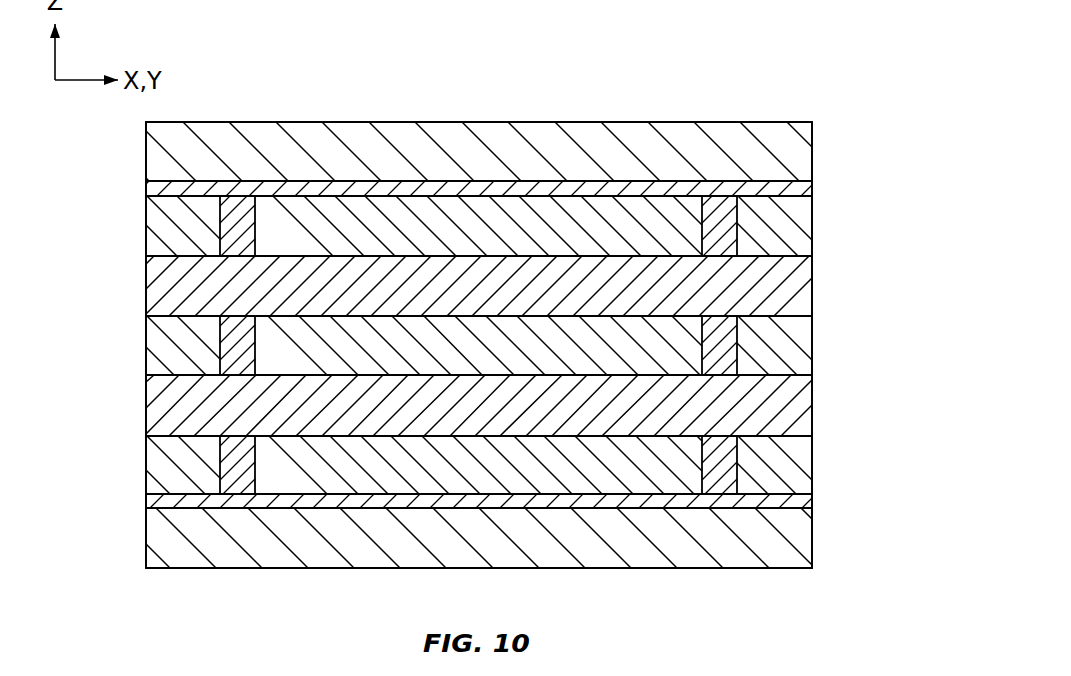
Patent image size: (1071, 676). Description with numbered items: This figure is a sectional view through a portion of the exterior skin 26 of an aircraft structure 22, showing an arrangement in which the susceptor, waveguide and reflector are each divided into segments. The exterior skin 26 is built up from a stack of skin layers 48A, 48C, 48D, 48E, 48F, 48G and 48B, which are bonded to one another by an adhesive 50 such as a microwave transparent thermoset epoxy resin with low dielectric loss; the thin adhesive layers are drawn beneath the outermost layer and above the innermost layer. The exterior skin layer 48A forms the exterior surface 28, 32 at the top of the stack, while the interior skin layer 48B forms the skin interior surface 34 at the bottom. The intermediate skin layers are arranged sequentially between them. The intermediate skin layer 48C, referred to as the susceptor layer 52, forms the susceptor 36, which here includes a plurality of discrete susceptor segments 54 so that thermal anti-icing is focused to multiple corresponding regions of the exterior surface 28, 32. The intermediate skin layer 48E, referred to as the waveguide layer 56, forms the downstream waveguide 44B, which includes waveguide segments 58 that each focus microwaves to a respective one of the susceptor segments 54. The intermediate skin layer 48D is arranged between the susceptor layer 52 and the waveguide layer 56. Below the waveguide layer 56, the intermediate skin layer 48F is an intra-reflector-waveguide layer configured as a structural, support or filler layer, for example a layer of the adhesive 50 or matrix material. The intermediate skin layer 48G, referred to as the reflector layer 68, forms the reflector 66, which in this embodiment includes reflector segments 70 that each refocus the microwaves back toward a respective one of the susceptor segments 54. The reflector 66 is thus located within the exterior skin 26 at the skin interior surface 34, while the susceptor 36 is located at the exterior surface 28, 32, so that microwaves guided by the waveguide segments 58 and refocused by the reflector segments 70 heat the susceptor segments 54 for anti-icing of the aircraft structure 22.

The aircraft structure 22 is at (522, 286).
The exterior skin 26 is at (808, 78).
The exterior surface 28 is at (479, 82).
The exterior surface 32 is at (358, 121).
The skin interior surface 34 is at (285, 570).
The susceptor 36 is at (582, 226).
The susceptor layer 52 is at (813, 226).
The downstream waveguide 44B is at (590, 345).
The waveguide layer 56 is at (813, 341).
The reflector 66 is at (582, 465).
The reflector layer 68 is at (813, 451).
The adhesive 50 is at (812, 190).
The susceptor segments 54 is at (192, 212).
The waveguide segments 58 is at (190, 316).
The reflector segments 70 is at (175, 482).
The exterior skin layer 48A is at (135, 153).
The interior skin layer 48B is at (135, 541).
The intermediate skin layer 48C is at (488, 161).
The intermediate skin layer 48D is at (452, 286).
The intermediate skin layer 48E is at (496, 345).
The intermediate skin layer 48F is at (135, 405).
The intermediate skin layer 48G is at (488, 529).